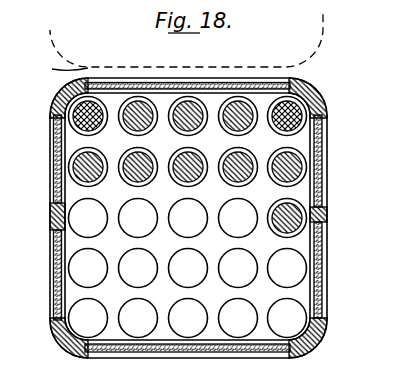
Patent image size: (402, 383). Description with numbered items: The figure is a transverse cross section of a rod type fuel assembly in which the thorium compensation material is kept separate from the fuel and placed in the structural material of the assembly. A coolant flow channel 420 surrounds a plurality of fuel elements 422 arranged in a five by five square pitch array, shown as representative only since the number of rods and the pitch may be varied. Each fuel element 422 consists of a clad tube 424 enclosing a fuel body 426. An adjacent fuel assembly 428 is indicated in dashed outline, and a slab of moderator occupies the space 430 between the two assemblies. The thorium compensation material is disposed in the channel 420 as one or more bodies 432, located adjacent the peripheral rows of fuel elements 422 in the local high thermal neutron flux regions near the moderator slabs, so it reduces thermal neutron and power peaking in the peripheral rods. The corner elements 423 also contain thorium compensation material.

The coolant flow channel 420 is at (314, 100).
The fuel elements 422 is at (251, 229).
The corner elements 423 is at (62, 108).
The clad tube 424 is at (316, 220).
The fuel body 426 is at (306, 216).
The adjacent fuel assembly 428 is at (327, 23).
The space 430 is at (53, 68).
The bodies 432 is at (327, 288).